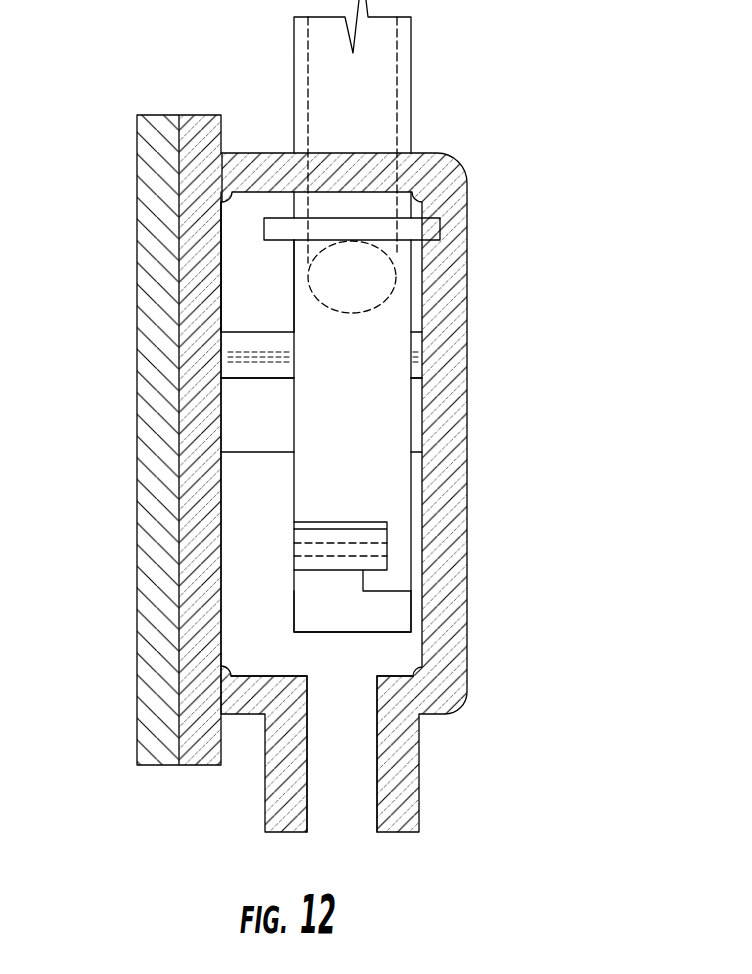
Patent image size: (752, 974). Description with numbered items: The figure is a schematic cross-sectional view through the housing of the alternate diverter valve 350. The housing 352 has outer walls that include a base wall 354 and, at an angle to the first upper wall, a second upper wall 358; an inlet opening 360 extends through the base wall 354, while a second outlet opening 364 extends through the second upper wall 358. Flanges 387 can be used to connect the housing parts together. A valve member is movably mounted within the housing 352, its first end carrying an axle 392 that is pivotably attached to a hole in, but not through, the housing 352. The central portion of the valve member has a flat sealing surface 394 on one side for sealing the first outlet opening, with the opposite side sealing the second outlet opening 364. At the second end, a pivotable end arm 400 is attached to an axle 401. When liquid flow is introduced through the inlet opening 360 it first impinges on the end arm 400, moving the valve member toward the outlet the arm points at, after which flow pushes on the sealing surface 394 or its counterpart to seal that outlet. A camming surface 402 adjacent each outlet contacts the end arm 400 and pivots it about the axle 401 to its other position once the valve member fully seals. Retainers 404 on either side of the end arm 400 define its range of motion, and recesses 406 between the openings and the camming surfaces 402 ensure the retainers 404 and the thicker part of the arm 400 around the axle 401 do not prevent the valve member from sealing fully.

The valve 350 is at (512, 180).
The housing 352 is at (467, 452).
The flanges 387 is at (222, 138).
The base wall 354 is at (258, 674).
The second upper wall 358 is at (243, 287).
The axle 392 is at (403, 228).
The flat sealing surface 394 is at (363, 407).
The second outlet opening 364 is at (357, 310).
The recesses 406 is at (262, 370).
The camming surface 402 is at (260, 427).
The retainers 404 is at (393, 577).
The axle 401 is at (387, 543).
The pivotable end arm 400 is at (377, 613).
The inlet opening 360 is at (353, 692).